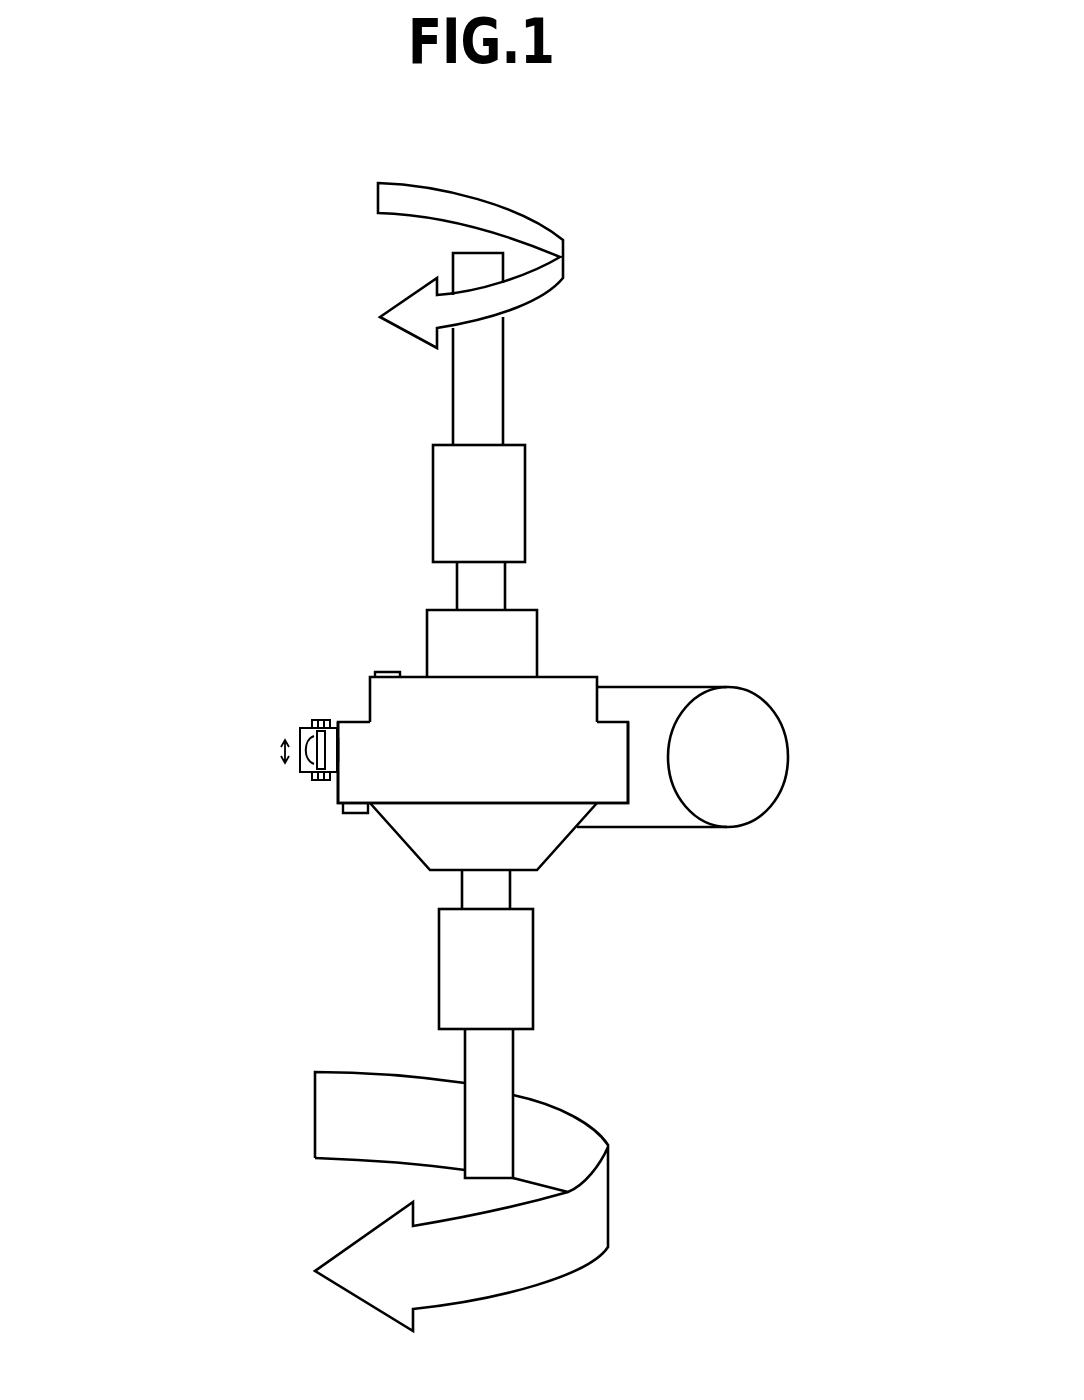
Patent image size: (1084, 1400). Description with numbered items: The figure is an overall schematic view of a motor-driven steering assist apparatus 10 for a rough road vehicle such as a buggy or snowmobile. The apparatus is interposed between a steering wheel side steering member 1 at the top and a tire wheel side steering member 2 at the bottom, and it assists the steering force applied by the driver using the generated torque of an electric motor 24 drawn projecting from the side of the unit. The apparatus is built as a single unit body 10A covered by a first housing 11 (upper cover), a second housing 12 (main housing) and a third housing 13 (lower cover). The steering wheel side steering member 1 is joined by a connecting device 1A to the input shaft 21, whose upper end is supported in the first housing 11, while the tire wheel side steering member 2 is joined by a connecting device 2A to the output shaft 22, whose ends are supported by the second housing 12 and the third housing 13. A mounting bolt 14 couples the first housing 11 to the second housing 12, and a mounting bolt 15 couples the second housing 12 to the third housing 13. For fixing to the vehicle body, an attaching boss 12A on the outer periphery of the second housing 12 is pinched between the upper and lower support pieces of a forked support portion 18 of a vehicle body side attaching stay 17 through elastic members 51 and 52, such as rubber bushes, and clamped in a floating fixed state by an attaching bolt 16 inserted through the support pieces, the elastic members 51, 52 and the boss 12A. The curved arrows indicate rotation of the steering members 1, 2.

The steering wheel side steering member 1 is at (492, 348).
The connecting device 1A is at (513, 498).
The input shaft 21 is at (493, 585).
The first housing 11 is at (427, 638).
The mounting bolt 14 is at (387, 672).
The motor-driven steering assist apparatus 10 is at (544, 724).
The unit body 10A is at (467, 723).
The elastic member 51 is at (334, 745).
The second housing 12 is at (338, 790).
The elastic member 52 is at (334, 752).
The attaching boss 12A is at (334, 750).
The third housing 13 is at (423, 847).
The mounting bolt 15 is at (348, 815).
The attaching bolt 16 is at (318, 720).
The vehicle body side attaching stay 17 is at (300, 735).
The forked support portion 18 is at (307, 776).
The electric motor 24 is at (772, 760).
The output shaft 22 is at (493, 888).
The connecting device 2A is at (508, 969).
The tire wheel side steering member 2 is at (497, 1072).